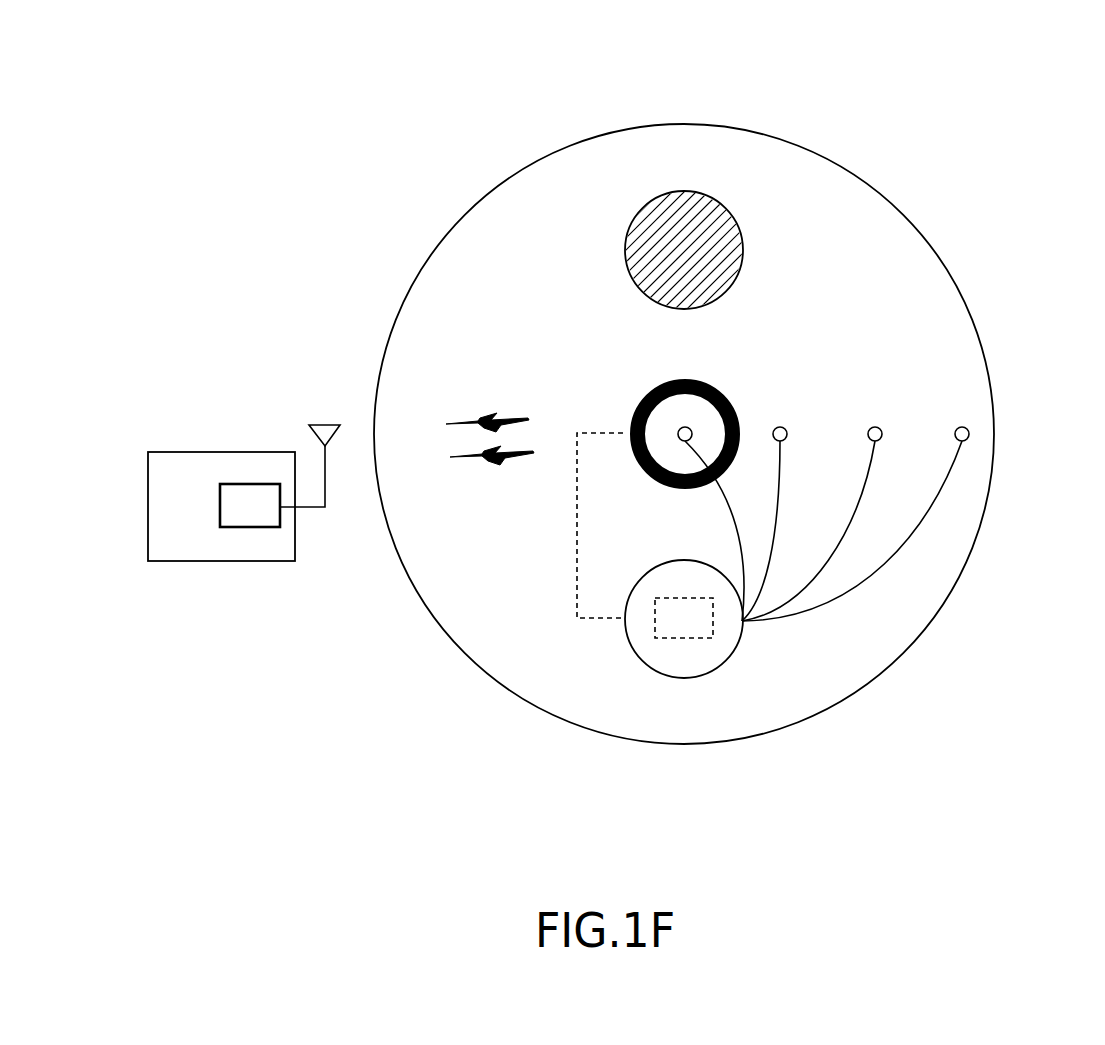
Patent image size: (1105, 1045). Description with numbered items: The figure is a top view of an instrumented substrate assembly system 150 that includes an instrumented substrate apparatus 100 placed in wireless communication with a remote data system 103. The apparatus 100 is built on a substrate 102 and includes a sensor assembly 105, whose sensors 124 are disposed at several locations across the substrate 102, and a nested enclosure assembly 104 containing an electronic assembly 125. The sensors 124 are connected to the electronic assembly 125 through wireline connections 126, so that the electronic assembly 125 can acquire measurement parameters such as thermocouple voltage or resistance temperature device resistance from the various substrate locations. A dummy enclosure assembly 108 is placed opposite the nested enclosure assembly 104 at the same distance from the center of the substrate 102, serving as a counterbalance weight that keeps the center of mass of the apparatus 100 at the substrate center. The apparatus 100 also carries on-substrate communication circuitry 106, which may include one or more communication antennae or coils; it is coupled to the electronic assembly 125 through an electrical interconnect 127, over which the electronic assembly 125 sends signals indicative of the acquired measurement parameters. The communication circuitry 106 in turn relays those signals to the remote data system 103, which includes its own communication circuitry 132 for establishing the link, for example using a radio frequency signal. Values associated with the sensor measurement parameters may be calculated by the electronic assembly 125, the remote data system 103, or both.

The instrumented substrate assembly system 150 is at (193, 59).
The instrumented substrate apparatus 100 is at (414, 237).
The substrate 102 is at (831, 187).
The remote data system 103 is at (243, 483).
The nested enclosure assembly 104 is at (689, 668).
The sensor assembly 105 is at (762, 664).
The communication circuitry 106 is at (694, 381).
The dummy enclosure assembly 108 is at (728, 261).
The sensors 124 is at (967, 427).
The electronic assembly 125 is at (686, 640).
The wireline connections 126 is at (885, 571).
The electrical interconnect 127 is at (577, 520).
The communication circuitry 132 is at (268, 517).